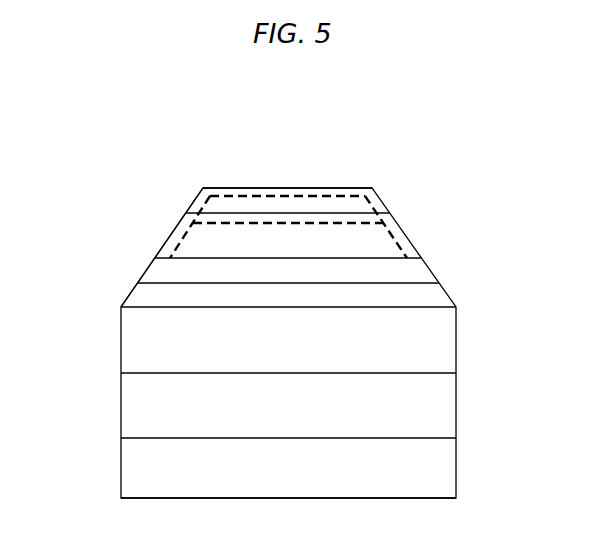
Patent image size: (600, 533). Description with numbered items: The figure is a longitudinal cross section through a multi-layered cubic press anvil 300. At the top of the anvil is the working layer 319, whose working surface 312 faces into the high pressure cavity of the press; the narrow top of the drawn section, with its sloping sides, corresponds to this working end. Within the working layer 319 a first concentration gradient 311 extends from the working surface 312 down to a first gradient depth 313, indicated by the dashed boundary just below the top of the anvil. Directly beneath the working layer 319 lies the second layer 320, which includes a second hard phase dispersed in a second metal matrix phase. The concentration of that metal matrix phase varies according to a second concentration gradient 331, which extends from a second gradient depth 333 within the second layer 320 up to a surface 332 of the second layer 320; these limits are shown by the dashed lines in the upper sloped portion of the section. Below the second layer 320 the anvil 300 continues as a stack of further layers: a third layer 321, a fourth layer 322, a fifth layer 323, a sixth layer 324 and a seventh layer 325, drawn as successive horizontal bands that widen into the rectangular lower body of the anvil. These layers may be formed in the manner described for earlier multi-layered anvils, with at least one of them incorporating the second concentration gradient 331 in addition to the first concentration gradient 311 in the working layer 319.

The cubic press anvil 300 is at (178, 130).
The first concentration gradient 311 is at (197, 197).
The working surface 312 is at (228, 188).
The first gradient depth 313 is at (352, 195).
The working layer 319 is at (360, 205).
The second layer 320 is at (378, 250).
The third layer 321 is at (423, 277).
The fourth layer 322 is at (438, 295).
The fifth layer 323 is at (132, 321).
The sixth layer 324 is at (432, 402).
The seventh layer 325 is at (448, 473).
The second concentration gradient 331 is at (380, 219).
The surface of the second layer 332 is at (225, 214).
The second gradient depth 333 is at (225, 232).